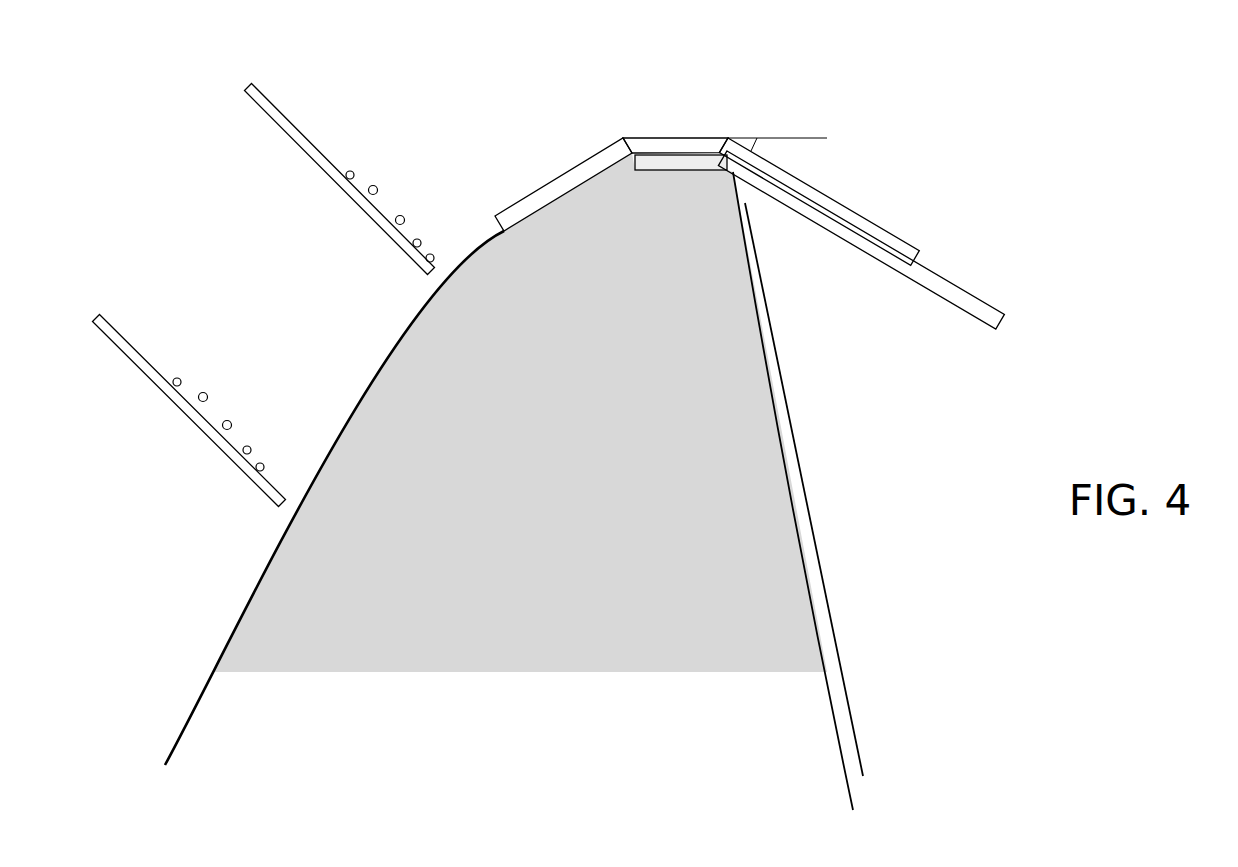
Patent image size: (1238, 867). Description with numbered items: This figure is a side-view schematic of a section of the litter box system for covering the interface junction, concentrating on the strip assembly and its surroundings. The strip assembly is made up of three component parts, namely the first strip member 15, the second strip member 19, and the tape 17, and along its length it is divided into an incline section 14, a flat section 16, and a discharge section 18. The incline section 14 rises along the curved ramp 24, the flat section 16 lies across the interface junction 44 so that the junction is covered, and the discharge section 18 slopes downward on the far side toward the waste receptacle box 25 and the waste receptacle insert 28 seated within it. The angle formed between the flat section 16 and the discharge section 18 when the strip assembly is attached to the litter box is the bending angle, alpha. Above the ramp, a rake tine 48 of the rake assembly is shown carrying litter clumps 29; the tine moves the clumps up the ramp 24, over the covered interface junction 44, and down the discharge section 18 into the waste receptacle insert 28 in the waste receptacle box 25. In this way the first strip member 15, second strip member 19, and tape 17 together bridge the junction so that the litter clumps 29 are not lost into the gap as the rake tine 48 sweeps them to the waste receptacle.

The incline section 14 is at (558, 178).
The first strip member 15 is at (648, 166).
The flat section 16 is at (675, 142).
The tape 17 is at (877, 235).
The discharge section 18 is at (837, 210).
The second strip member 19 is at (948, 295).
The ramp 24 is at (417, 317).
The waste receptacle box 25 is at (828, 702).
The waste receptacle insert 28 is at (848, 703).
The litter clumps 29 is at (398, 213).
The interface junction 44 is at (708, 172).
The rake tine 48 is at (275, 108).